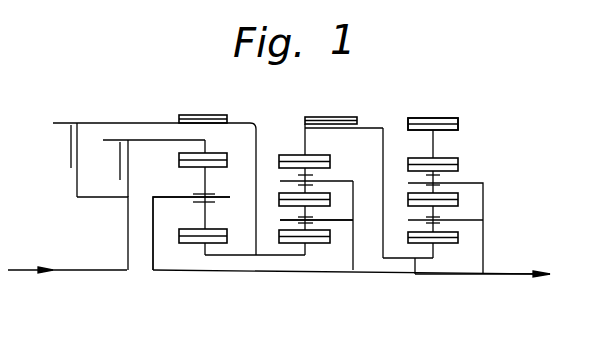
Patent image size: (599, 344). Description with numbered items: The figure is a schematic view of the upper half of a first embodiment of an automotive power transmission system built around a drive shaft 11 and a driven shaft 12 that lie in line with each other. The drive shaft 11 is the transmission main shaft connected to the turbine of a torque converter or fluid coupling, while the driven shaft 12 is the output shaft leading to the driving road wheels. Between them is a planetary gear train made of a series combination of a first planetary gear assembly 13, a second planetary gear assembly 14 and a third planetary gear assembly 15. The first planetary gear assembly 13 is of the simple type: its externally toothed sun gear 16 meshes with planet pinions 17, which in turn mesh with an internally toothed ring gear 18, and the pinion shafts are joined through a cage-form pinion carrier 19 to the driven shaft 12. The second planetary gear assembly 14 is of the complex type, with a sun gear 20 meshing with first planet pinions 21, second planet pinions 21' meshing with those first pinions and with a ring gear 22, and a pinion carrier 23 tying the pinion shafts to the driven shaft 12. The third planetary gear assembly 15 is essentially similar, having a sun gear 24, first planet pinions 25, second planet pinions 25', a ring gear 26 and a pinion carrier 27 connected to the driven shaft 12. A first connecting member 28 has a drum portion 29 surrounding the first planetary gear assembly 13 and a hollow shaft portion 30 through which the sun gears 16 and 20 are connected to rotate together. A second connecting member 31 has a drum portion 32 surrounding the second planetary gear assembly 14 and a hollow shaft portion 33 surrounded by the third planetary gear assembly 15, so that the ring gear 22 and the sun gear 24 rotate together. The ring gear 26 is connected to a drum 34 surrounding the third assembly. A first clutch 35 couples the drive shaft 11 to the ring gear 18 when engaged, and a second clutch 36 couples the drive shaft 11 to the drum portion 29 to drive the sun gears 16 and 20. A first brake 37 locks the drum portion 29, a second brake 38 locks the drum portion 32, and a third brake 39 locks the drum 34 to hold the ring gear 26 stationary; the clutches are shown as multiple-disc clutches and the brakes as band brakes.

The drive shaft 11 is at (103, 271).
The driven shaft 12 is at (468, 277).
The first planetary gear assembly 13 is at (177, 245).
The second planetary gear assembly 14 is at (313, 244).
The third planetary gear assembly 15 is at (438, 259).
The sun gear 16 is at (218, 244).
The planet pinions 17 is at (227, 165).
The ring gear 18 is at (179, 155).
The pinion carrier 19 is at (175, 199).
The sun gear 20 is at (316, 246).
The first planet pinions 21 is at (332, 222).
The second planet pinions 21' is at (324, 168).
The ring gear 22 is at (318, 156).
The pinion carrier 23 is at (353, 266).
The sun gear 24 is at (442, 246).
The first planet pinions 25 is at (474, 212).
The second planet pinions 25' is at (462, 167).
The ring gear 26 is at (457, 155).
The pinion carrier 27 is at (484, 253).
The first connecting member 28 is at (256, 141).
The drum portion 29 is at (143, 122).
The hollow shaft portion 30 is at (272, 271).
The second connecting member 31 is at (388, 143).
The drum portion 32 is at (375, 128).
The hollow shaft portion 33 is at (415, 282).
The drum 34 is at (458, 128).
The first clutch 35 is at (120, 155).
The second clutch 36 is at (70, 143).
The first brake 37 is at (208, 115).
The second brake 38 is at (350, 117).
The third brake 39 is at (450, 118).